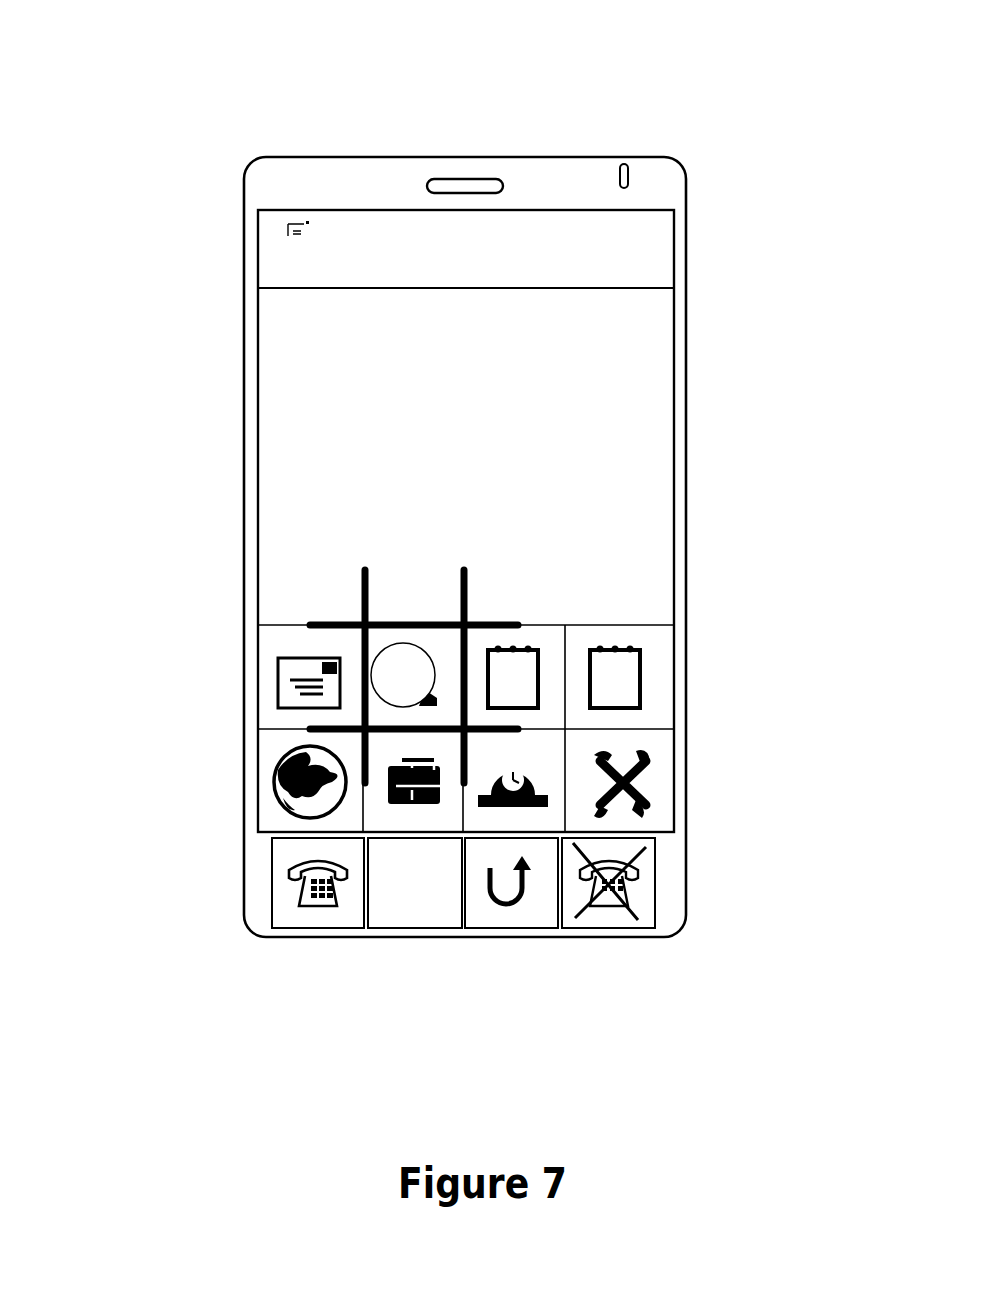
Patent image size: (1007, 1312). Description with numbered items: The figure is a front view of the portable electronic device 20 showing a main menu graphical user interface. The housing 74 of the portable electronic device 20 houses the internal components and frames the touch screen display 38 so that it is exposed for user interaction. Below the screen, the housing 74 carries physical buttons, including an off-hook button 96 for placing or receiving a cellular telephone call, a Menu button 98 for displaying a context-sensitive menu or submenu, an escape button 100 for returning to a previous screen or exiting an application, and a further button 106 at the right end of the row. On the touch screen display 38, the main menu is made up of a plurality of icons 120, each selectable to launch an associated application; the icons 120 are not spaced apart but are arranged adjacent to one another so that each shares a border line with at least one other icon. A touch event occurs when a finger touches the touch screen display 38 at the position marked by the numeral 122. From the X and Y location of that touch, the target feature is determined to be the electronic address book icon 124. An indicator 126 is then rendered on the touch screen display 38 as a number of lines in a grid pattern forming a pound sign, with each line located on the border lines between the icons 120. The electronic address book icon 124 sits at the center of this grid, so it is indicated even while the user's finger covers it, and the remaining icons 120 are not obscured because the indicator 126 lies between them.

The portable electronic device 20 is at (752, 84).
The housing 74 is at (674, 521).
The touch screen display 38 is at (667, 587).
The indicator 126 is at (362, 593).
The touch event position 122 is at (373, 660).
The electronic address book icon 124 is at (437, 702).
The icons 120 is at (641, 796).
The off-hook button 96 is at (327, 907).
The Menu button 98 is at (433, 906).
The escape button 100 is at (528, 912).
The end call key 106 is at (615, 912).